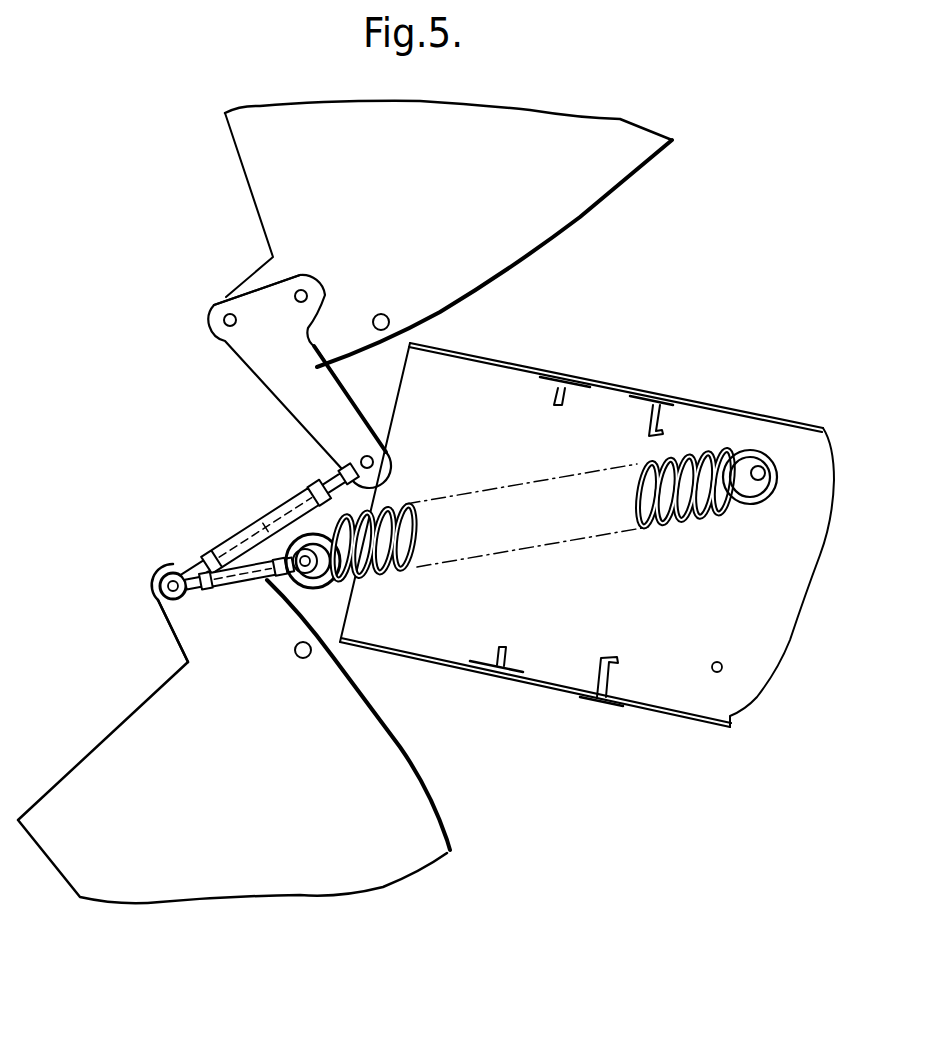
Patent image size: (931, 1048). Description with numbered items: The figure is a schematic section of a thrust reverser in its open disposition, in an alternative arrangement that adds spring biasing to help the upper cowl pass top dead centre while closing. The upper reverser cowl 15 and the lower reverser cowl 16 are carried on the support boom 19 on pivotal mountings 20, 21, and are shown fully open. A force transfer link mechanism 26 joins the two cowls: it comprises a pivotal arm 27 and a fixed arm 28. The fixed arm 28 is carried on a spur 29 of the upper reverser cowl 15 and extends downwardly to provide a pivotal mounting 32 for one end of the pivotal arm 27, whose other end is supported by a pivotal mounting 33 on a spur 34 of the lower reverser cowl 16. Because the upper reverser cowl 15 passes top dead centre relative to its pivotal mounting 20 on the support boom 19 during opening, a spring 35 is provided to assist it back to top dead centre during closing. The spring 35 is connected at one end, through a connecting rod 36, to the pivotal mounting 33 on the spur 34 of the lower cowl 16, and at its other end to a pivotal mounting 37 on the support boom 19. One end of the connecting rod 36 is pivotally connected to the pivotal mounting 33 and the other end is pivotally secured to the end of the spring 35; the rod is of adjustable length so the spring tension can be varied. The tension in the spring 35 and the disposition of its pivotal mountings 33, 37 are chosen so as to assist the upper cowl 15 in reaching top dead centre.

The upper reverser cowl 15 is at (590, 188).
The lower reverser cowl 16 is at (403, 782).
The support boom 19 is at (537, 373).
The pivotal mounting 20 is at (388, 316).
The pivotal mounting 21 is at (311, 650).
The force transfer link mechanism 26 is at (226, 572).
The pivotal arm 27 is at (235, 523).
The fixed arm 28 is at (295, 398).
The spur 29 is at (240, 285).
The pivotal mounting 32 is at (382, 458).
The pivotal mounting 33 is at (186, 568).
The spur 34 is at (164, 617).
The spring 35 is at (658, 522).
The connecting rod 36 is at (238, 590).
The pivotal mounting 37 is at (753, 470).